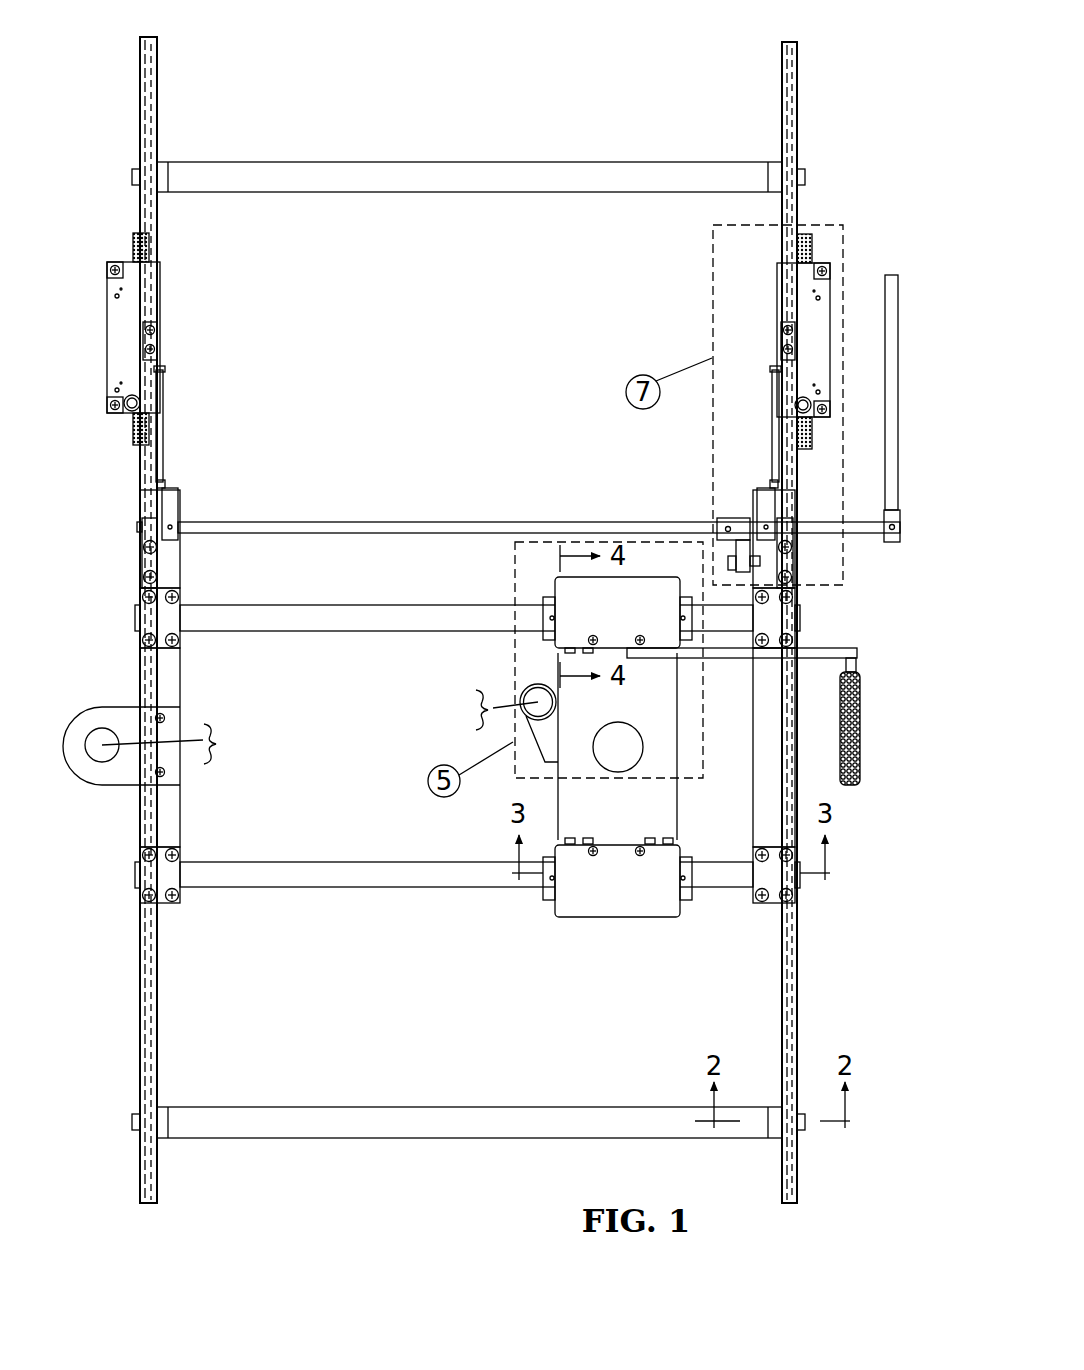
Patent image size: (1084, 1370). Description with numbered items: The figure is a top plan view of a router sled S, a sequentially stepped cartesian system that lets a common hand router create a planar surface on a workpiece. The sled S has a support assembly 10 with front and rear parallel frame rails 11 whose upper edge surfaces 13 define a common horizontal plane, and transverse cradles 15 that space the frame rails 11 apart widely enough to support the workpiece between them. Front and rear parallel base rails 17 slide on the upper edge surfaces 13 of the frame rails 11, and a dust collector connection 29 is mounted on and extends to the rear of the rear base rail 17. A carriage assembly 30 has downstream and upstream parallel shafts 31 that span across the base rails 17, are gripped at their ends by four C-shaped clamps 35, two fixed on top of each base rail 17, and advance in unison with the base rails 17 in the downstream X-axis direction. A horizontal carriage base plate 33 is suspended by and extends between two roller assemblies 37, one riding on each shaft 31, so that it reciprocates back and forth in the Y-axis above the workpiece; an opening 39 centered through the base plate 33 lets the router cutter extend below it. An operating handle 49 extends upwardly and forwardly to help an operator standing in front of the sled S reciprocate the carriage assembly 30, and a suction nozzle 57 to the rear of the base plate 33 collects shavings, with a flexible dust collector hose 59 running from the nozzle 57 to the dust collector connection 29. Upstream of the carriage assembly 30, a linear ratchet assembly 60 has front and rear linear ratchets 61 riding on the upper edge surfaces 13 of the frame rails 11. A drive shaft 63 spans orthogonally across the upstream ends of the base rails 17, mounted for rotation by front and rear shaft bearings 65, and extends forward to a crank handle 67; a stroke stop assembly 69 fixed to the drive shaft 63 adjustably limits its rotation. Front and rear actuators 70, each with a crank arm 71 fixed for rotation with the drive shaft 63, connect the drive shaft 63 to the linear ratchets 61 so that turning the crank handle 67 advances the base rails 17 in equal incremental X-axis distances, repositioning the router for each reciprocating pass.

The support assembly 10 is at (348, 74).
The sled S is at (825, 109).
The frame rails 11 is at (158, 66).
The upper edge surfaces 13 is at (151, 130).
The transverse cradles 15 is at (510, 160).
The base rails 17 is at (172, 557).
The dust collector connection 29 is at (114, 711).
The carriage assembly 30 is at (348, 733).
The parallel shafts 31 is at (342, 605).
The carriage base plate 33 is at (680, 727).
The C-shaped clamps 35 is at (176, 630).
The roller assemblies 37 is at (556, 586).
The opening 39 is at (636, 763).
The operating handle 49 is at (742, 659).
The suction nozzle 57 is at (525, 690).
The flexible dust collector hose 59 is at (492, 712).
The linear ratchet assembly 60 is at (445, 393).
The linear ratchets 61 is at (107, 345).
The drive shaft 63 is at (334, 521).
The shaft bearings 65 is at (145, 560).
The crank handle 67 is at (898, 335).
The stroke stop assembly 69 is at (722, 525).
The actuators 70 is at (180, 421).
The crank arm 71 is at (173, 507).